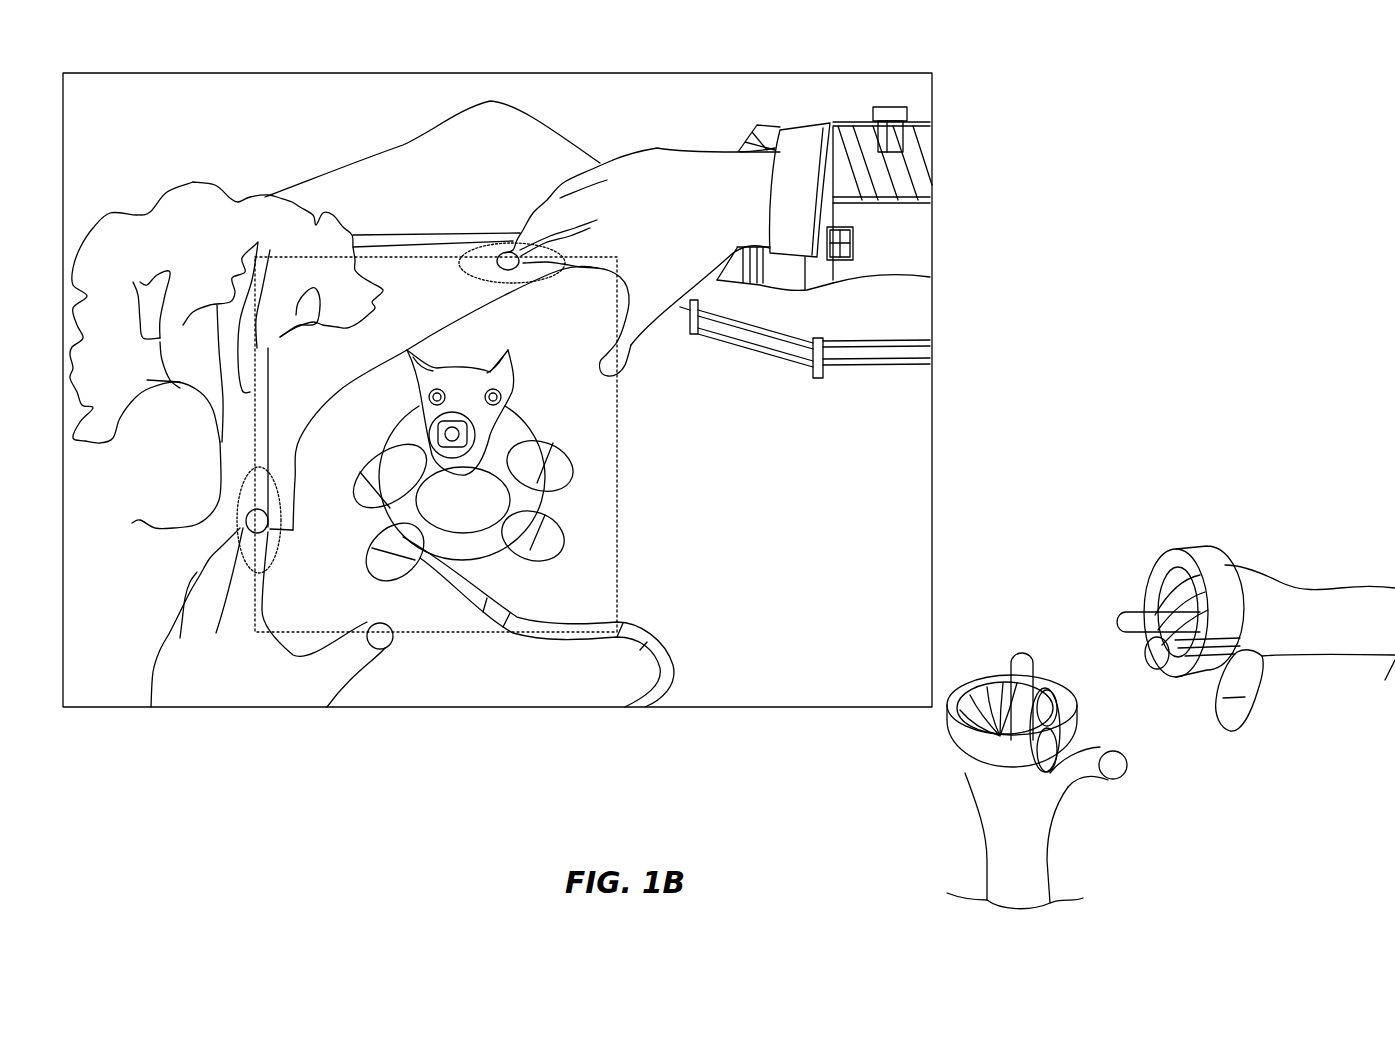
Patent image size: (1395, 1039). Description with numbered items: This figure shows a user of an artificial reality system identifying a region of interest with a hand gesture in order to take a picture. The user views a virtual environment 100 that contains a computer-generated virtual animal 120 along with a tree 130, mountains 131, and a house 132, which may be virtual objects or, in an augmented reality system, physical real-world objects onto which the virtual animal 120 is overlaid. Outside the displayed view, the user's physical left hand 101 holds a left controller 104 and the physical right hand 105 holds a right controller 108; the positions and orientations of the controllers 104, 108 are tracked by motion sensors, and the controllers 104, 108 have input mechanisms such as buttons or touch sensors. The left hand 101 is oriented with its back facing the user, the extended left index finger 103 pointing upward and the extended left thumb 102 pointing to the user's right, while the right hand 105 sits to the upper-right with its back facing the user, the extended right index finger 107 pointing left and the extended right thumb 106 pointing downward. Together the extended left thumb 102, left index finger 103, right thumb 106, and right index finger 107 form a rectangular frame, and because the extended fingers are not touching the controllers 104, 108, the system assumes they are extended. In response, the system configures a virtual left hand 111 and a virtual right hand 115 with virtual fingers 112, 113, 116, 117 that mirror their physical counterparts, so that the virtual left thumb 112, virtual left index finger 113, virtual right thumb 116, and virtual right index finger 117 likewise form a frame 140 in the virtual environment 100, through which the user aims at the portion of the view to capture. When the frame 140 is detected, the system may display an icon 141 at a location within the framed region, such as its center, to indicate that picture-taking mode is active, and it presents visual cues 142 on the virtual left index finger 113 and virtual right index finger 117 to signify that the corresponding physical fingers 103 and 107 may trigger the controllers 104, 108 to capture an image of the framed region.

The virtual environment 100 is at (108, 83).
The left hand 101 is at (1023, 766).
The left thumb 102 is at (1120, 783).
The left index finger 103 is at (1019, 664).
The left controller 104 is at (954, 740).
The right hand 105 is at (1220, 628).
The right thumb 106 is at (1230, 713).
The right index finger 107 is at (1130, 617).
The right controller 108 is at (1176, 560).
The virtual left hand 111 is at (299, 632).
The virtual left thumb 112 is at (371, 650).
The virtual left index finger 113 is at (253, 578).
The virtual right hand 115 is at (561, 326).
The virtual right thumb 116 is at (627, 330).
The virtual right index finger 117 is at (576, 247).
The virtual animal 120 is at (454, 471).
The tree 130 is at (197, 184).
The mountains 131 is at (412, 148).
The house 132 is at (760, 126).
The frame 140 is at (618, 562).
The icon 141 is at (460, 432).
The visual cues 142 is at (485, 238).